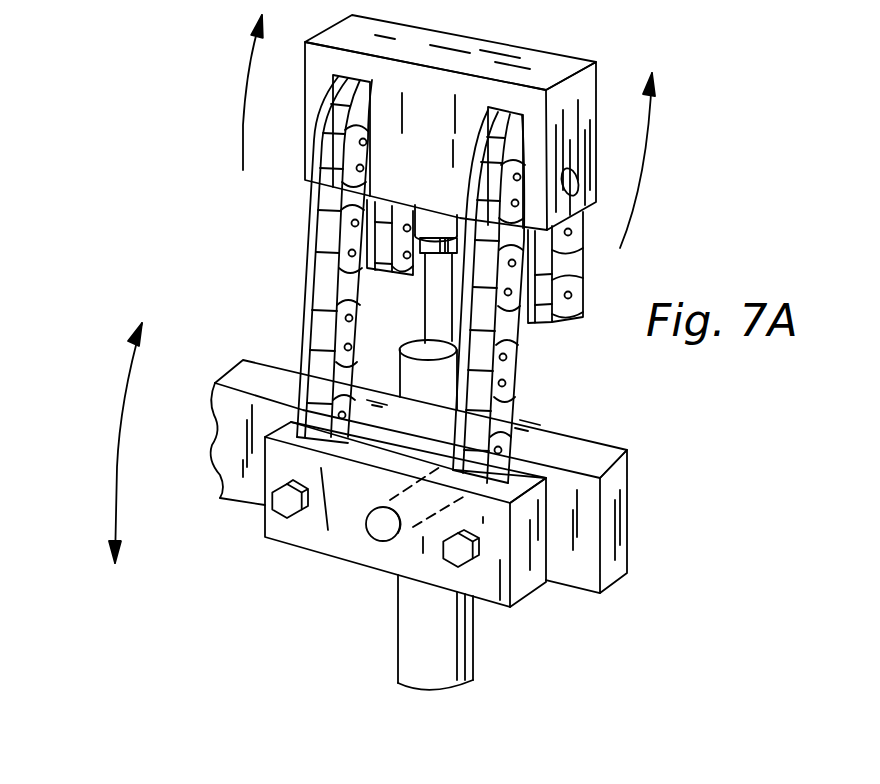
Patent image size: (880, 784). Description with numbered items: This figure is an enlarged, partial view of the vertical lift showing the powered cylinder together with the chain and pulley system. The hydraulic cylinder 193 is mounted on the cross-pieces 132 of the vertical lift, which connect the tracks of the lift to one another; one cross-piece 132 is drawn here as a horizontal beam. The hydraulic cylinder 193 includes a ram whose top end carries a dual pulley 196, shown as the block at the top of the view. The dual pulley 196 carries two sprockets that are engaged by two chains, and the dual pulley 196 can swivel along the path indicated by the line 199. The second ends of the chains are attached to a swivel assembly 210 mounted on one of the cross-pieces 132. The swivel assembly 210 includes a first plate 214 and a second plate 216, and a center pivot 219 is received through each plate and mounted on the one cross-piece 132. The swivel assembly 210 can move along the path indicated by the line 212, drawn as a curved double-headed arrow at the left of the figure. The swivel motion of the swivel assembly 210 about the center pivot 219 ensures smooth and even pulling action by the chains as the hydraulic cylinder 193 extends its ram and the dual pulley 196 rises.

The dual pulley 196 is at (533, 60).
The line 199 is at (643, 178).
The line 212 is at (118, 415).
The first plate 214 is at (265, 448).
The second plate 216 is at (530, 470).
The cross-piece 132 is at (620, 503).
The swivel assembly 210 is at (298, 568).
The center pivot 219 is at (382, 530).
The hydraulic cylinder 193 is at (418, 622).